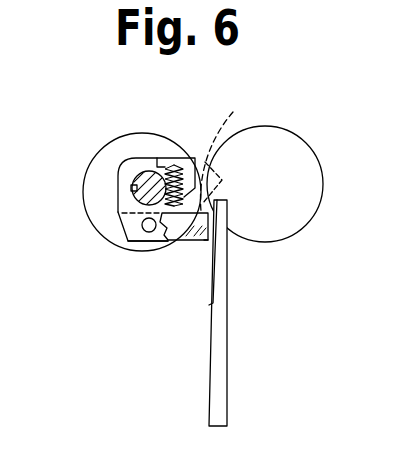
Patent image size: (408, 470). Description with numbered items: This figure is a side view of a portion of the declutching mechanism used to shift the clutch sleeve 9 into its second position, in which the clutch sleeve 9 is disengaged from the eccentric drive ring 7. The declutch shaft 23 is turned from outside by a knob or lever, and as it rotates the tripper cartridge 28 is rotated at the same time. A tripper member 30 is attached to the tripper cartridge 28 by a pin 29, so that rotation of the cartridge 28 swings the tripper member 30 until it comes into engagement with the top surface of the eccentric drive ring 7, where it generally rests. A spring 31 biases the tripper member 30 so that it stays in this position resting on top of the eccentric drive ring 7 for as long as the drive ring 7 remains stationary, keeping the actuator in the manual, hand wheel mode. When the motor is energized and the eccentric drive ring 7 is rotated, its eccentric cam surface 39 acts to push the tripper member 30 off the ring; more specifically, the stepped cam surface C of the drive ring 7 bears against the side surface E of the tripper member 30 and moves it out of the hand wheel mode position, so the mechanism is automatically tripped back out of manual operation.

The eccentric drive ring 7 is at (221, 325).
The clutch sleeve 9 is at (208, 234).
The declutch shaft 23 is at (146, 191).
The tripper cartridge 28 is at (139, 170).
The pin 29 is at (146, 229).
The tripper member 30 is at (237, 110).
The spring 31 is at (170, 170).
The eccentric cam surface 39 is at (207, 303).
The side surface of tripper E is at (168, 243).
The stepped cam surface C is at (208, 240).